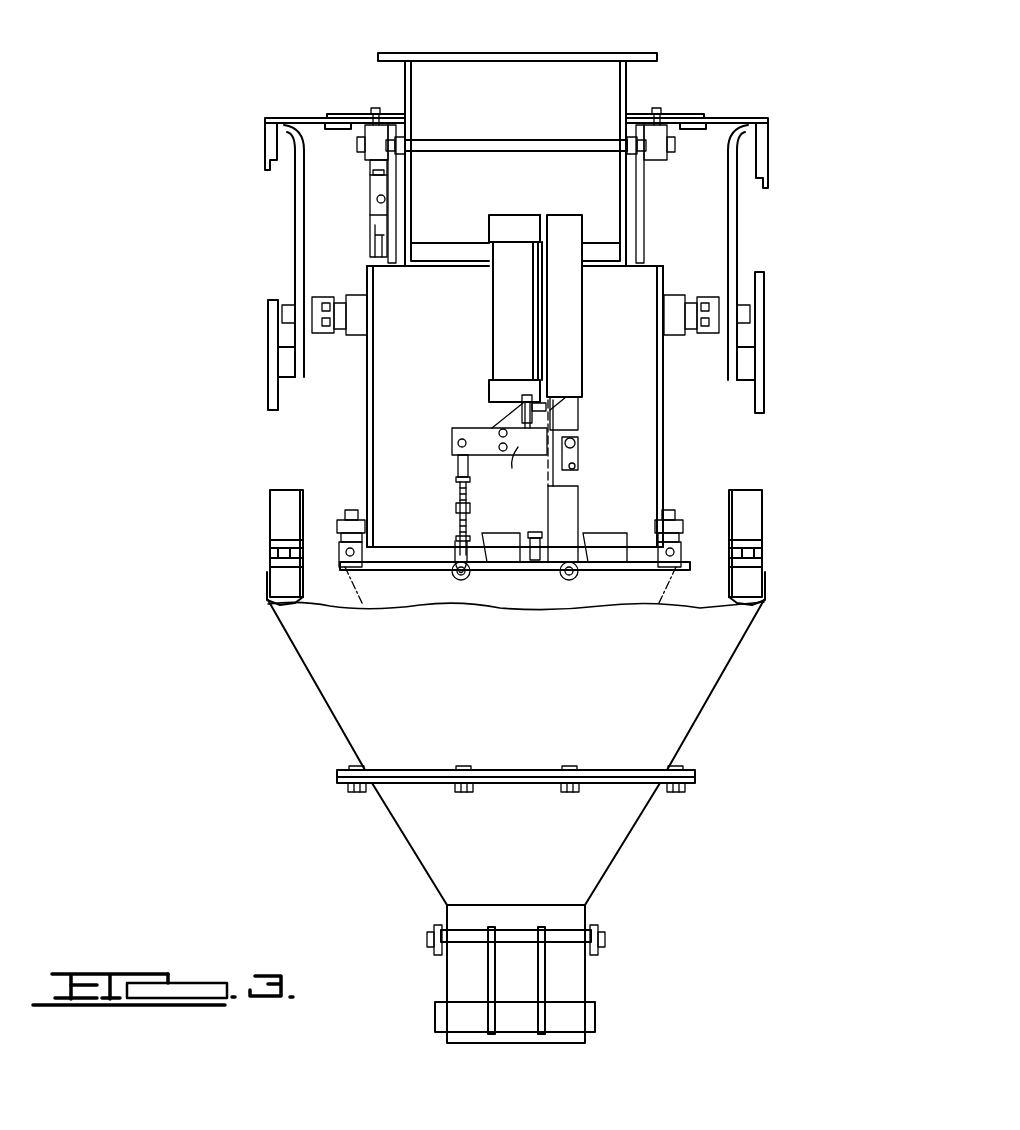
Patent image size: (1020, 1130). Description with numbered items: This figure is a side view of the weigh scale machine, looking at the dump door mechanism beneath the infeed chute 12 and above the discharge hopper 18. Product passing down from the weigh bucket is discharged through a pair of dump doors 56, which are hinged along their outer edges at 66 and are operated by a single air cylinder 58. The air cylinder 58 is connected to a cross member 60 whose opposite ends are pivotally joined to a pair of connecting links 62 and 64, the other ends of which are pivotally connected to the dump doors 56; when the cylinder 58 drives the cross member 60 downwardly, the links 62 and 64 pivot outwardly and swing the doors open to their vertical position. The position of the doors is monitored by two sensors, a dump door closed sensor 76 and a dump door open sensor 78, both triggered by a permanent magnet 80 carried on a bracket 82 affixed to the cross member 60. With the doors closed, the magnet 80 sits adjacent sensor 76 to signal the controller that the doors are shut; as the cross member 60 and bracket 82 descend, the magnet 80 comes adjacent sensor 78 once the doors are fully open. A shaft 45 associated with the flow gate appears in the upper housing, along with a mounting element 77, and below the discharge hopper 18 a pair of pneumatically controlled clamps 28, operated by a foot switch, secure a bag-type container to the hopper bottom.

The infeed chute 12 is at (500, 52).
The shaft 45 is at (503, 148).
The mounting bracket 77 is at (377, 199).
The air cylinder 58 is at (508, 305).
The permanent magnet 80 is at (544, 393).
The cross member 60 is at (481, 430).
The dump door closed sensor 76 is at (580, 407).
The connecting link 64 is at (578, 465).
The bracket 82 is at (513, 460).
The connecting link 62 is at (457, 507).
The dump door open sensor 78 is at (538, 550).
The dump doors 56 is at (418, 560).
The hinge 66 is at (345, 568).
The discharge hopper 18 is at (330, 717).
The pneumatically controlled clamps 28 is at (585, 1012).